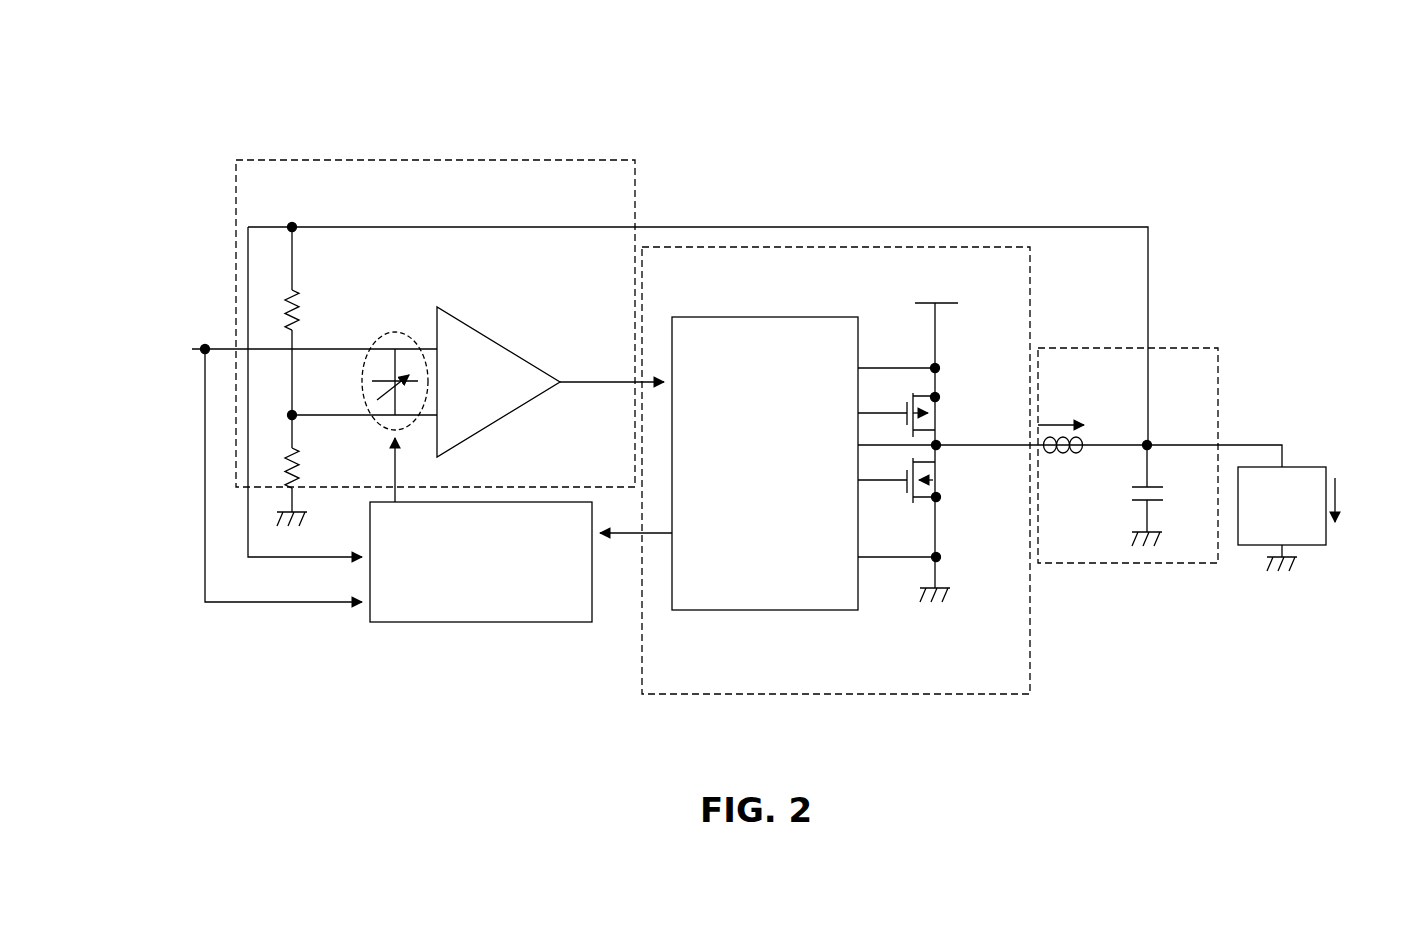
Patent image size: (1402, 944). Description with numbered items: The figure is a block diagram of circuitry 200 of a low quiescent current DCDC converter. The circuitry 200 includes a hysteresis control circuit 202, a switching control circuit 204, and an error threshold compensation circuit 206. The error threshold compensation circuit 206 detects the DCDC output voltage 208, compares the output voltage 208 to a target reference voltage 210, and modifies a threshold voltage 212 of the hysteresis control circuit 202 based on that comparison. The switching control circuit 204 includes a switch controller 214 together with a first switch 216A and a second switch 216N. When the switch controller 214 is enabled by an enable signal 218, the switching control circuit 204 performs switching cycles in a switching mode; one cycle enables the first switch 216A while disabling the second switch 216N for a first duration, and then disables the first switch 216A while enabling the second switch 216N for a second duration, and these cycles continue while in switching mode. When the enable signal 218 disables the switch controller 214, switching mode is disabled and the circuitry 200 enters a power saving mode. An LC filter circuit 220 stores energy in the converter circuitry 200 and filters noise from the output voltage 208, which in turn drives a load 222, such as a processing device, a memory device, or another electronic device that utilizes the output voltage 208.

The circuitry 200 is at (158, 113).
The hysteresis control circuit 202 is at (281, 186).
The switching control circuit 204 is at (693, 276).
The error threshold compensation circuit 206 is at (465, 612).
The output voltage 208 is at (1237, 444).
The Vref 210 is at (280, 459).
The threshold voltage 212 is at (383, 417).
The switch controller 214 is at (749, 492).
The first switch 216A is at (899, 360).
The second switch 216N is at (899, 549).
The enable signal 218 is at (608, 383).
The LC filter circuit 220 is at (1083, 373).
The load 222 is at (1318, 552).